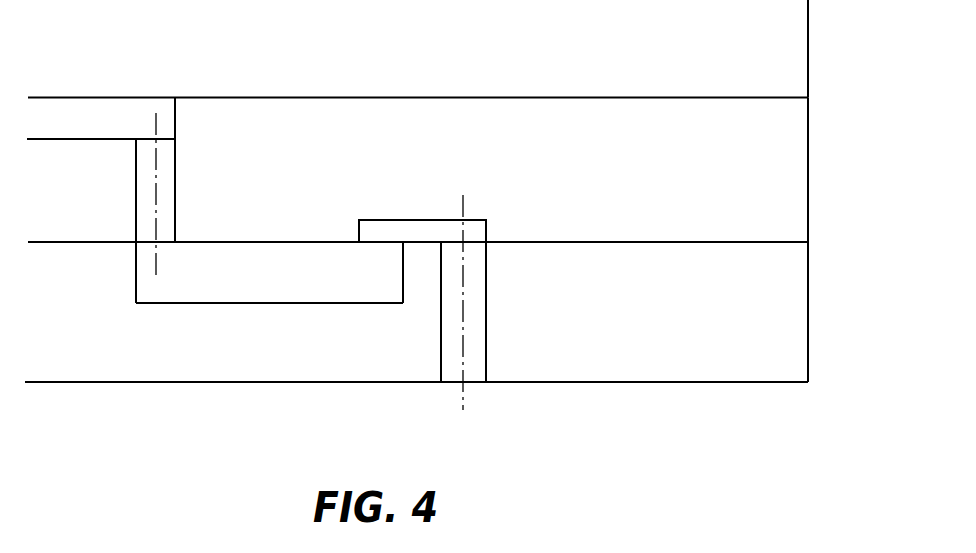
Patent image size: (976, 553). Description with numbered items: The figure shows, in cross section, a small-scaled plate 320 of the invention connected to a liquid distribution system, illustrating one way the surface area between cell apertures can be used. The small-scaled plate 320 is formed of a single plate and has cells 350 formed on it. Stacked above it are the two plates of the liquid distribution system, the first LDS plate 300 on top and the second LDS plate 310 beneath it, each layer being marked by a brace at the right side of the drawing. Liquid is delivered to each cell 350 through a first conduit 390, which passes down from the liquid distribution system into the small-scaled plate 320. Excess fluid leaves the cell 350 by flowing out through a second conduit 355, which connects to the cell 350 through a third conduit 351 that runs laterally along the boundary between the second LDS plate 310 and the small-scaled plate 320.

The first LDS plate 300 is at (832, 0).
The second LDS plate 310 is at (832, 100).
The small-scaled plate 320 is at (832, 247).
The cell 350 is at (136, 303).
The third conduit 351 is at (475, 230).
The second conduit 355 is at (475, 332).
The first conduit 390 is at (167, 185).